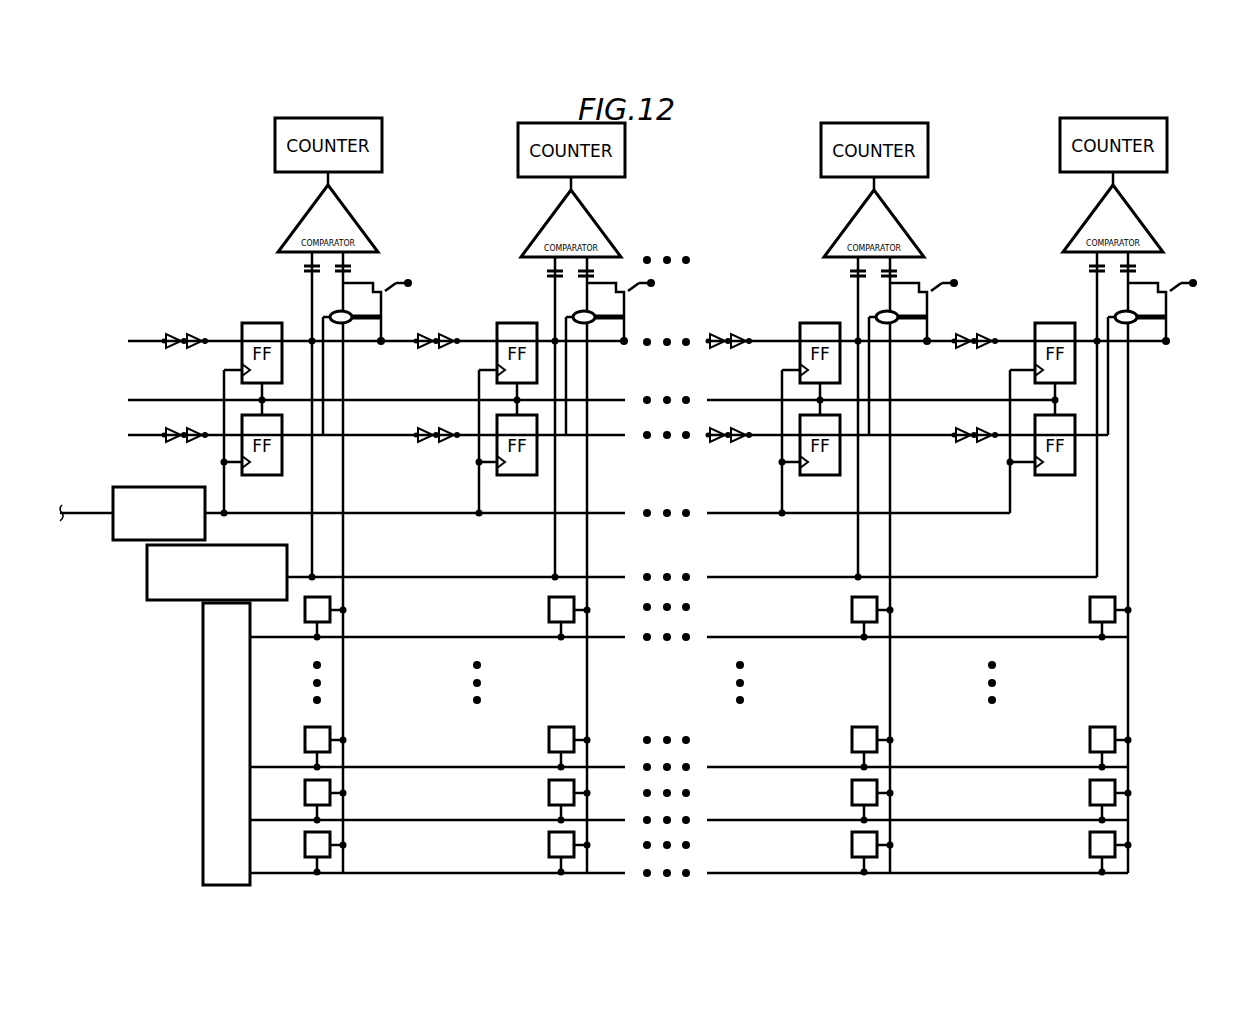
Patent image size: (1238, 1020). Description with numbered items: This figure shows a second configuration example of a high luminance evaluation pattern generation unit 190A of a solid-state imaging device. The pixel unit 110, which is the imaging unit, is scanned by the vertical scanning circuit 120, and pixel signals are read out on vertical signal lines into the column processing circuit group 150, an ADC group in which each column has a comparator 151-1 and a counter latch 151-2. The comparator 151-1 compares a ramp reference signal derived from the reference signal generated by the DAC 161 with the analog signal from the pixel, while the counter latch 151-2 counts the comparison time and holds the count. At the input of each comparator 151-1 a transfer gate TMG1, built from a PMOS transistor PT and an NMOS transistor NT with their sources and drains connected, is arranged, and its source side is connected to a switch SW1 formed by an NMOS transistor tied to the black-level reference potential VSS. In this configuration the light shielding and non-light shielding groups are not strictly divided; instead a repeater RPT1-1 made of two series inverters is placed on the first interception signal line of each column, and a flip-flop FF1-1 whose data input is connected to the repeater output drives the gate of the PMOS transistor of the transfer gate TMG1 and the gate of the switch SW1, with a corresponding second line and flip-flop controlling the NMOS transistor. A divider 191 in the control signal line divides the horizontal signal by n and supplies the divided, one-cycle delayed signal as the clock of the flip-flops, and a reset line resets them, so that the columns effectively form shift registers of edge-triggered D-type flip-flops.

The high luminance evaluation pattern generation unit 190A is at (128, 282).
The column processing circuit group 150 is at (270, 202).
The comparator 151-1 is at (362, 220).
The counter latch 151-2 is at (383, 147).
The switch SW1 is at (378, 282).
The transfer gate TMG1 is at (362, 306).
The flip-flop FF1-1 is at (259, 321).
The repeater RPT1-1 is at (184, 320).
The divider 191 is at (135, 546).
The DAC 161 is at (185, 603).
The vertical scanning circuit 120 is at (201, 746).
The pixel unit 110 is at (676, 694).